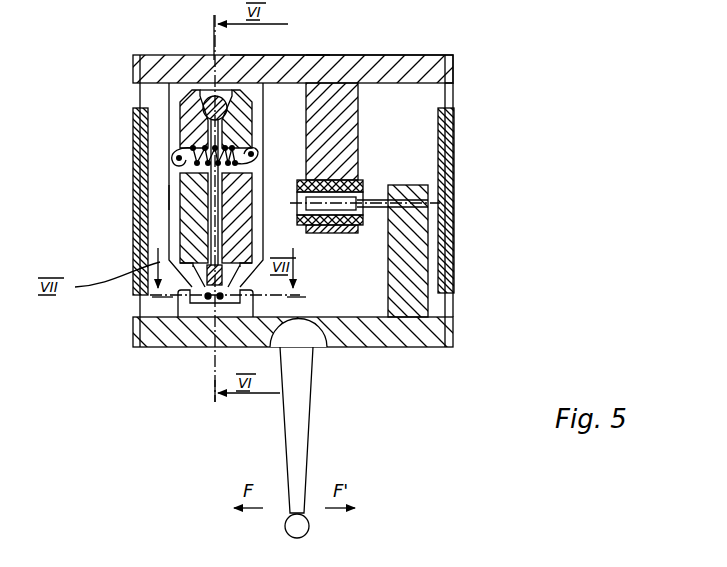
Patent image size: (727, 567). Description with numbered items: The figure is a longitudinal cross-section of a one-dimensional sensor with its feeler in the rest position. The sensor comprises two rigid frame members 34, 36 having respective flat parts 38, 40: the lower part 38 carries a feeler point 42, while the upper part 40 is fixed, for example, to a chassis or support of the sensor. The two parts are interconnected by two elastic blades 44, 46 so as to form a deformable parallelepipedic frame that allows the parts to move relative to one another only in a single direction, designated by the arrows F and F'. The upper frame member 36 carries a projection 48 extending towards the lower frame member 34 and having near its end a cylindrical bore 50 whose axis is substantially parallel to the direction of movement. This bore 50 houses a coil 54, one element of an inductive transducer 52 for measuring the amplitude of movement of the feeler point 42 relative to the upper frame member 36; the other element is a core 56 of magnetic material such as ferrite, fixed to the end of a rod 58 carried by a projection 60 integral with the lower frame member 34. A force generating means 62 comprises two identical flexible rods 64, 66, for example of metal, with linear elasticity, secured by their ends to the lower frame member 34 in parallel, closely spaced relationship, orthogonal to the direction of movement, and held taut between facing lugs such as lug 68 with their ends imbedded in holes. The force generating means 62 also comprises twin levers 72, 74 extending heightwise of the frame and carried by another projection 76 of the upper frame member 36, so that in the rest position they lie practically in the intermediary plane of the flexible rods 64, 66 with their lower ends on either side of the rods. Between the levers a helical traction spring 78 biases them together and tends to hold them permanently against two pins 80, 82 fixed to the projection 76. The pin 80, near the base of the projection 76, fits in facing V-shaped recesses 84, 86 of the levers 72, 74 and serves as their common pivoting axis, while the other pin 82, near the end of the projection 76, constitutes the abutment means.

The rigid frame member 34 is at (418, 347).
The rigid frame member 36 is at (385, 55).
The flat part 38 is at (150, 325).
The flat part 40 is at (150, 62).
The feeler point 42 is at (297, 455).
The elastic blade 44 is at (455, 100).
The elastic blade 46 is at (138, 93).
The projection 48 is at (342, 127).
The cylindrical bore 50 is at (332, 184).
The inductive transducer 52 is at (363, 240).
The coil 54 is at (338, 233).
The core 56 is at (320, 233).
The rod 58 is at (430, 204).
The projection 60 is at (405, 283).
The force generating means 62 is at (166, 197).
The flexible rod 64 is at (160, 333).
The flexible rod 66 is at (222, 300).
The lug 68 is at (208, 300).
The lever 72 is at (192, 228).
The lever 74 is at (232, 205).
The projection 76 is at (168, 124).
The helical traction spring 78 is at (178, 165).
The pin 80 is at (290, 55).
The pin 82 is at (178, 303).
The V-shaped recess 84 is at (200, 88).
The V-shaped recess 86 is at (230, 112).